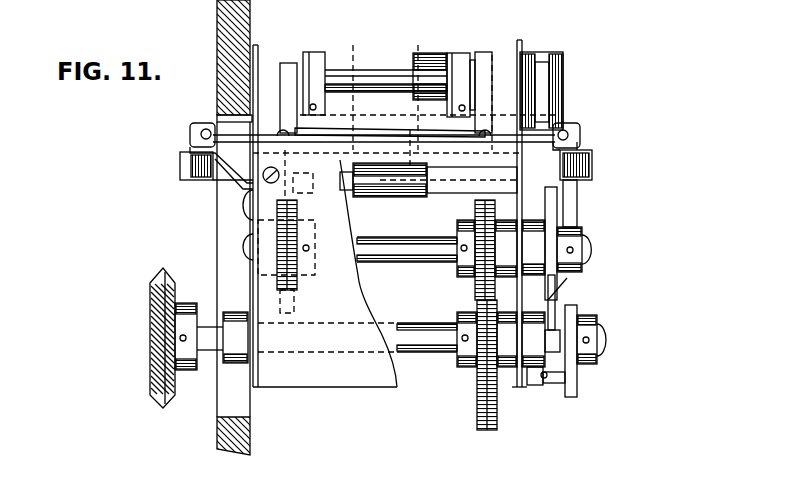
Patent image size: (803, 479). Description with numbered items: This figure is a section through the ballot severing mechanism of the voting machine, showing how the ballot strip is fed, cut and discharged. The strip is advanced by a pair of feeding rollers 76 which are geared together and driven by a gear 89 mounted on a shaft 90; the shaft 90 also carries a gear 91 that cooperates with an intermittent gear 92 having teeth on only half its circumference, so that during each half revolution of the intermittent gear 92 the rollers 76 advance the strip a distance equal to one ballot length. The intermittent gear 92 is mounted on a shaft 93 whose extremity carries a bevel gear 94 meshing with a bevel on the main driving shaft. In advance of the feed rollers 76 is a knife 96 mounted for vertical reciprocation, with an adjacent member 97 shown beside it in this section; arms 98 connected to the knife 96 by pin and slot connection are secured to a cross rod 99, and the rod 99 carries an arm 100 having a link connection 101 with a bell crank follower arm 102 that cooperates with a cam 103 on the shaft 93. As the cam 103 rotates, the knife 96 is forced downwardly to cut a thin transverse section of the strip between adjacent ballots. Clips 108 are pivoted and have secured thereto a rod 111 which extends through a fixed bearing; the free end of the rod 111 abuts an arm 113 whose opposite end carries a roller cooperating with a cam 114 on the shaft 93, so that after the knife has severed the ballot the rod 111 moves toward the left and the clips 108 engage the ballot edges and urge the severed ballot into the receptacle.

The feeding rollers 76 is at (386, 198).
The gear 89 is at (280, 247).
The shaft 90 is at (390, 262).
The gear 91 is at (477, 282).
The intermittent gear 92 is at (493, 422).
The shaft 93 is at (430, 356).
The bevel gear 94 is at (162, 398).
The knife 96 is at (383, 111).
The bracket 97 is at (432, 80).
The arms 98 is at (324, 67).
The cross rod 99 is at (346, 68).
The arm 100 is at (540, 80).
The link connection 101 is at (552, 194).
The bell crank follower arm 102 is at (550, 320).
The cam 103 is at (548, 346).
The clips 108 is at (284, 132).
The rod 111 is at (200, 133).
The arm 113 is at (562, 290).
The cam 114 is at (577, 385).